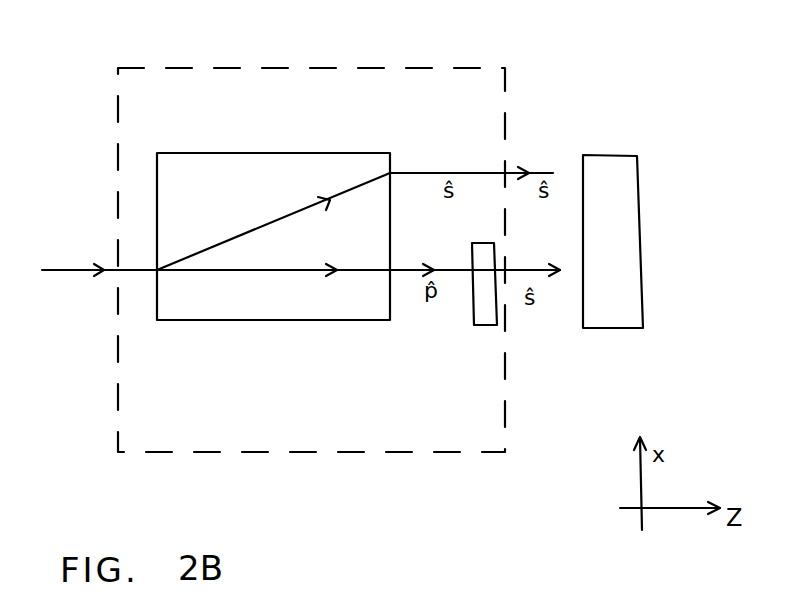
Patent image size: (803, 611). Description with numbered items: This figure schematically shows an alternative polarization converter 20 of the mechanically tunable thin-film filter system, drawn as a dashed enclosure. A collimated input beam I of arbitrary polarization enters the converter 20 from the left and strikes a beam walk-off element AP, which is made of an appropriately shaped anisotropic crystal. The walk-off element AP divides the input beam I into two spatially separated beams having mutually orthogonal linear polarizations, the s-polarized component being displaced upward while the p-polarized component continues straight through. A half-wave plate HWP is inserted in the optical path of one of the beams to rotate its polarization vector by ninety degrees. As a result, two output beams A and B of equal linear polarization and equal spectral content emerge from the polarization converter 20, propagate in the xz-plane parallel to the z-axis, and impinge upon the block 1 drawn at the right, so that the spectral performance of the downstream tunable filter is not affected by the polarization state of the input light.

The polarization converting component 20 is at (458, 63).
The optical target / detector block 1 is at (629, 201).
The beam walk-off element AP is at (314, 287).
The half-wave plate HWP is at (504, 331).
The input beam I is at (93, 314).
The output beam A is at (541, 168).
The output beam B is at (543, 277).